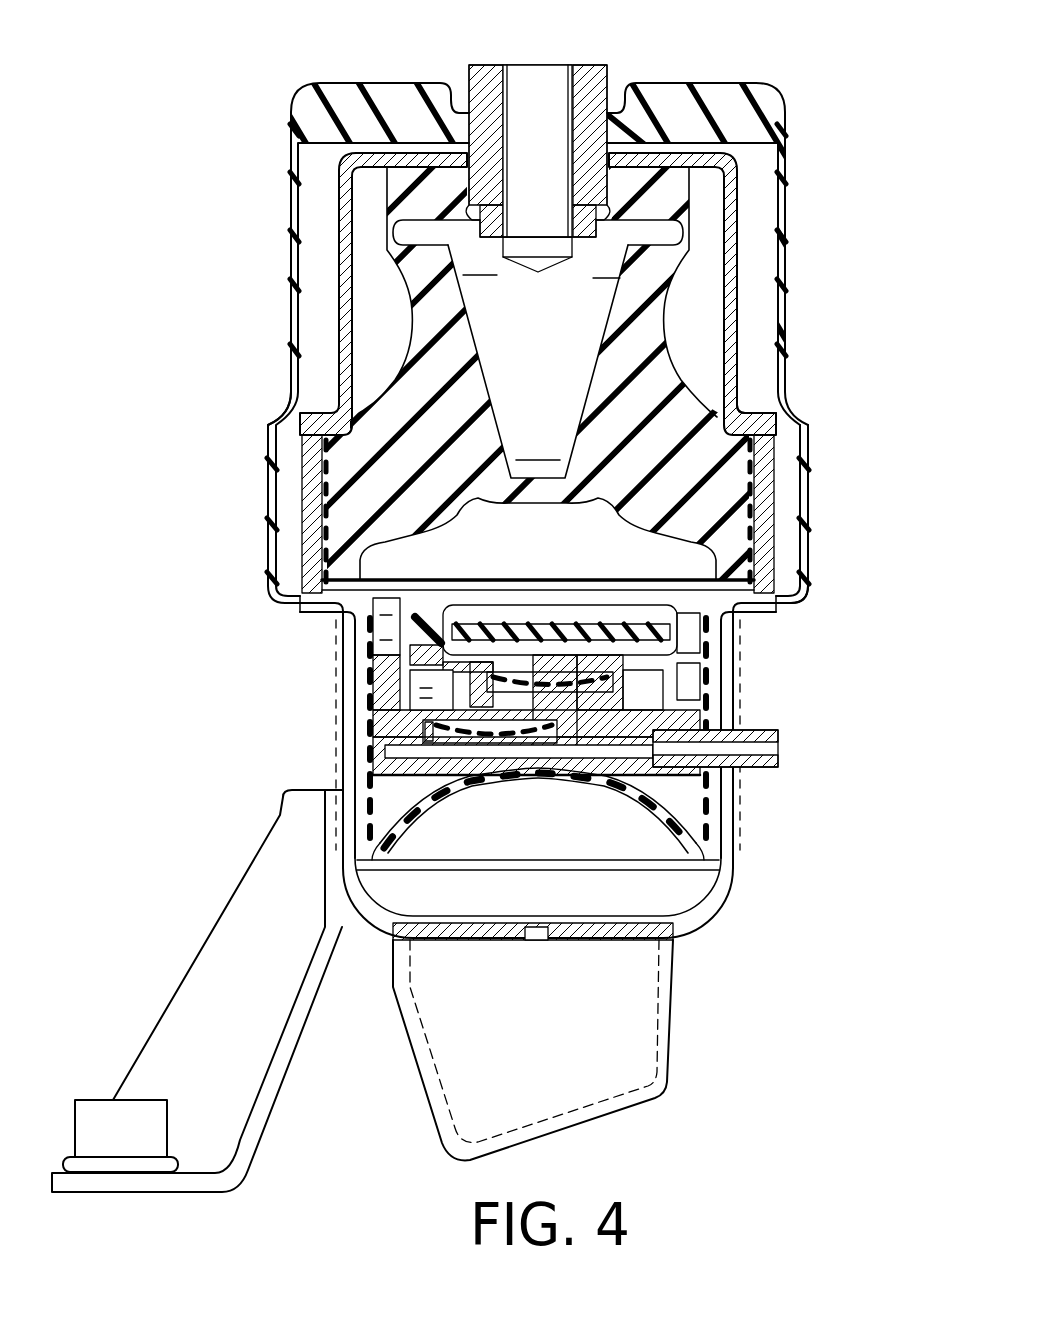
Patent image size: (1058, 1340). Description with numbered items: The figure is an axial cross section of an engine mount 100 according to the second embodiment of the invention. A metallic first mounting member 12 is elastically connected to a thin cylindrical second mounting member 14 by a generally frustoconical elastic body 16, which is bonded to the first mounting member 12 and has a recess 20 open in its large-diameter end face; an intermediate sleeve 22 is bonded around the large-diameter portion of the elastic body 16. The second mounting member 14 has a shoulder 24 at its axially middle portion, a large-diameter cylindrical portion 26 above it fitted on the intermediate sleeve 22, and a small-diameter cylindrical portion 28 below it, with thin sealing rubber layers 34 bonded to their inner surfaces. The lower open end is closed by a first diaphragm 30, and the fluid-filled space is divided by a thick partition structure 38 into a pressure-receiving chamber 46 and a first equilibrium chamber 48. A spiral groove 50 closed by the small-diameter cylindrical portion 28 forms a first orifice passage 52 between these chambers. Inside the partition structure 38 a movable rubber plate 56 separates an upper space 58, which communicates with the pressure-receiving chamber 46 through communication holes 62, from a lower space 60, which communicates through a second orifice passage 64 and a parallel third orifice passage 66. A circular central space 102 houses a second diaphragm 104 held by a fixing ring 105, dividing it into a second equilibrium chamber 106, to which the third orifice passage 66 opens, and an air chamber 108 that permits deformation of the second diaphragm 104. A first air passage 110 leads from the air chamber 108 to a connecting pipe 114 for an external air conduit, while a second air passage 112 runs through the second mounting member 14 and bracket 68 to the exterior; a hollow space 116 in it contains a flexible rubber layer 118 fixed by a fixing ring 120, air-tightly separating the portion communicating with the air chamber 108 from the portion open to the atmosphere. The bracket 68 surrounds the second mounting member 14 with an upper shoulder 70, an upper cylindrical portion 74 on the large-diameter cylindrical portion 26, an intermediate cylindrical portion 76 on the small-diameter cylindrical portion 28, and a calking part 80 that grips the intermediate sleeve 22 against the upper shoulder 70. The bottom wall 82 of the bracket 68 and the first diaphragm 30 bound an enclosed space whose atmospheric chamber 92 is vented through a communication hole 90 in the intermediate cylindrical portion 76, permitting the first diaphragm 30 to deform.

The engine mount 100 is at (686, 61).
The first mounting member 12 is at (598, 280).
The second mounting member 14 is at (784, 483).
The elastic body 16 is at (428, 308).
The recess 20 is at (465, 500).
The intermediate sleeve 22 is at (300, 465).
The shoulder 24 is at (345, 607).
The large-diameter cylindrical portion 26 is at (300, 492).
The small-diameter cylindrical portion 28 is at (715, 660).
The first diaphragm 30 is at (723, 878).
The sealing rubber layers 34 is at (345, 652).
The partition structure 38 is at (300, 398).
The pressure-receiving chamber 46 is at (728, 425).
The first equilibrium chamber 48 is at (400, 838).
The spiral groove 50 is at (700, 633).
The first orifice passage 52 is at (365, 627).
The rubber plate 56 is at (517, 640).
The upper space 58 is at (497, 607).
The lower space 60 is at (412, 574).
The communication holes 62 is at (473, 607).
The second orifice passage 64 is at (655, 682).
The third orifice passage 66 is at (585, 660).
The bracket 68 is at (739, 843).
The upper shoulder 70 is at (773, 616).
The upper cylindrical portion 74 is at (782, 452).
The intermediate cylindrical portion 76 is at (725, 815).
The calking part 80 is at (760, 420).
The bottom wall 82 is at (592, 945).
The communication hole 90 is at (548, 945).
The atmospheric chamber 92 is at (640, 935).
The central space 102 is at (650, 905).
The second diaphragm 104 is at (545, 668).
The fixing ring 105 is at (387, 683).
The second equilibrium chamber 106 is at (620, 660).
The air chamber 108 is at (410, 692).
The first air passage 110 is at (630, 775).
The second air passage 112 is at (387, 753).
The connecting pipe 114 is at (770, 728).
The hollow space 116 is at (345, 830).
The flexible rubber layer 118 is at (423, 727).
The fixing ring 120 is at (436, 735).